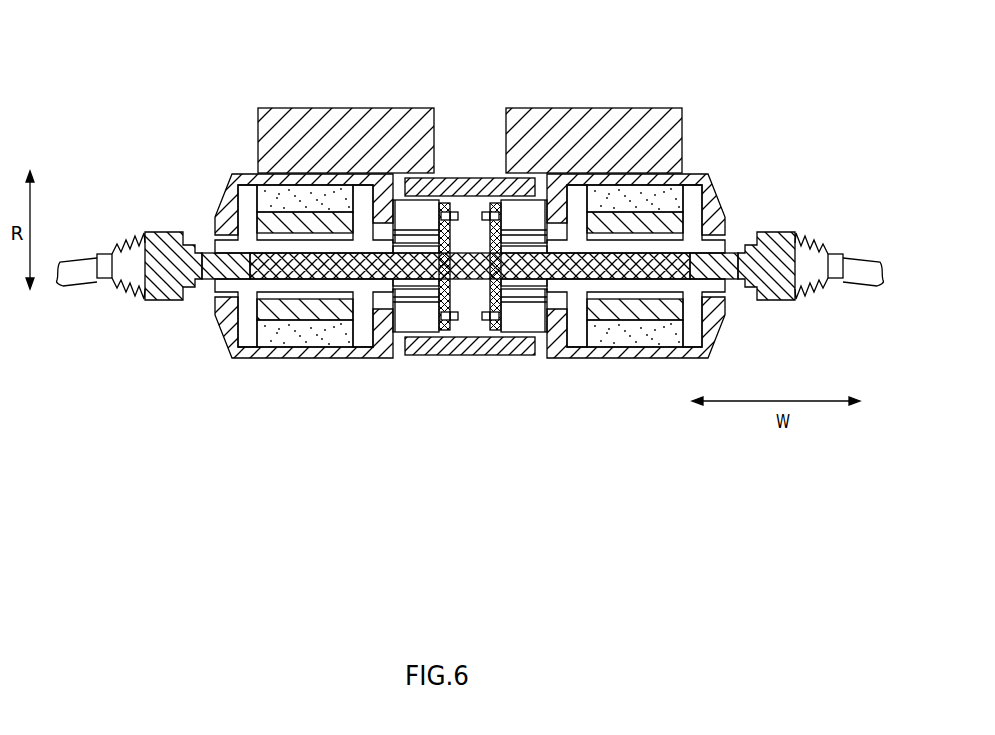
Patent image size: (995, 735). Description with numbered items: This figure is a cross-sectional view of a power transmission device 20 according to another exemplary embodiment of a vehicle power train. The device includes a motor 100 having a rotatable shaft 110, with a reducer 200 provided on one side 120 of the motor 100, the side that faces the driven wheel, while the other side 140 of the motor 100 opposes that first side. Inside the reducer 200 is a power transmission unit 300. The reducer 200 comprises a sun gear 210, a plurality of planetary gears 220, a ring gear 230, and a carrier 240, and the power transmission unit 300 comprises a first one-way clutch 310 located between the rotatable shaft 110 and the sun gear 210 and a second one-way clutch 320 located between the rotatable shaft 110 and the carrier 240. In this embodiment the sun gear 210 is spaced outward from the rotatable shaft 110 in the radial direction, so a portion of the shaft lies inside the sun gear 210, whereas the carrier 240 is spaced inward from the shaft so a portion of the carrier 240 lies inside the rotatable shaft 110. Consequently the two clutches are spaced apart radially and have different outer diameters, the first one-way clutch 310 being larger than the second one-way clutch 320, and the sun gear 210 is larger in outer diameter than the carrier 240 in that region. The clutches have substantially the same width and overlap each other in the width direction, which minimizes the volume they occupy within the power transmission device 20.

The power transmission device 20 is at (251, 65).
The motor 100 is at (322, 381).
The rotatable shaft 110 is at (273, 243).
The one side 120 is at (469, 89).
The other side 140 is at (198, 122).
The reducer 200 is at (623, 428).
The sun gear 210 is at (404, 230).
The planetary gears 220 is at (424, 210).
The ring gear 230 is at (472, 183).
The carrier 240 is at (388, 282).
The power transmission unit 300 is at (468, 417).
The first one-way clutch 310 is at (427, 293).
The second one-way clutch 320 is at (452, 320).